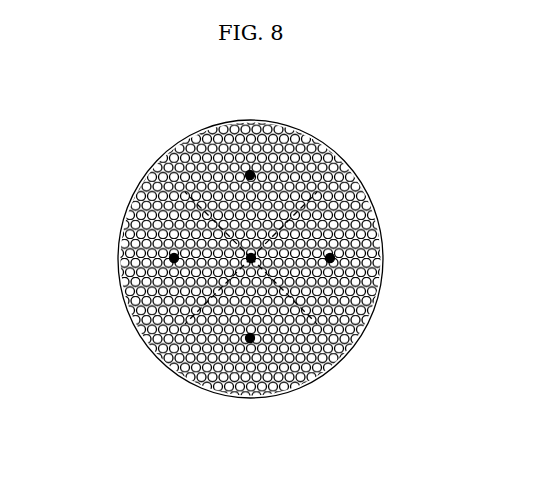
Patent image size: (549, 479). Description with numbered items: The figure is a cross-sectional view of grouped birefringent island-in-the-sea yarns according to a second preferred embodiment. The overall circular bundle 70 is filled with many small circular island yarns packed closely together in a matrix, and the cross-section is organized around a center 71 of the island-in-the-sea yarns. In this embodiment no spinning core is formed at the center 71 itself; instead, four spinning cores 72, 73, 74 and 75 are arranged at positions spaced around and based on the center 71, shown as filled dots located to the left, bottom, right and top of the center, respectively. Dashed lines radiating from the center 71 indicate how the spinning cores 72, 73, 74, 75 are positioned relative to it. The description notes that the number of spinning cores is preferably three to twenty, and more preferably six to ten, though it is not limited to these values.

The bundle of wires 70 is at (210, 130).
The center 71 is at (327, 362).
The spinning core 72 is at (170, 259).
The spinning core 73 is at (246, 343).
The spinning core 74 is at (335, 254).
The spinning core 75 is at (254, 176).